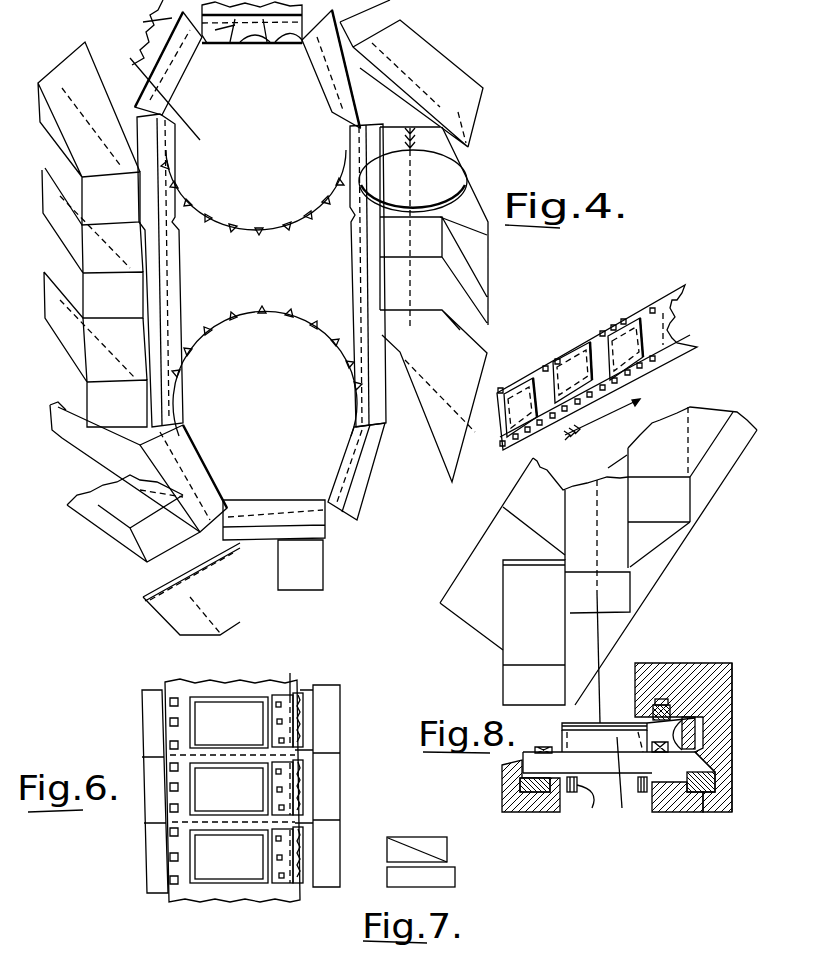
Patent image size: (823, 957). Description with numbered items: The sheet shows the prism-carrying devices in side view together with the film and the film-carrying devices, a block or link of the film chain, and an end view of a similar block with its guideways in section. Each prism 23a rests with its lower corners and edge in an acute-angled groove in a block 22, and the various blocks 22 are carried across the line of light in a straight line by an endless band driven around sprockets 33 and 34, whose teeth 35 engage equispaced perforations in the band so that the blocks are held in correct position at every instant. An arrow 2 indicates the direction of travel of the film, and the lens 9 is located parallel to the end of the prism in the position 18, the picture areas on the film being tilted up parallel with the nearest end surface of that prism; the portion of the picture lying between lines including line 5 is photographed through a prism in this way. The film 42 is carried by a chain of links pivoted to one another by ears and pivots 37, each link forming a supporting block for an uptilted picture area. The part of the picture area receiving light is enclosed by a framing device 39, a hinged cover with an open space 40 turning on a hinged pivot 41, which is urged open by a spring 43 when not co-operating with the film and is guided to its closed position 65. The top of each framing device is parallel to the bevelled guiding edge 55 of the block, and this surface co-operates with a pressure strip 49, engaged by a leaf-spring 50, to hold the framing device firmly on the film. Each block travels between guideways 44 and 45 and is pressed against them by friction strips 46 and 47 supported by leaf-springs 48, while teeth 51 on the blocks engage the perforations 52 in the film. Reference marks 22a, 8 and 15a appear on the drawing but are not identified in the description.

In FIG. 4, the block 22 is at (333, 100).
In FIG. 4, the prism 23a is at (367, 317).
In FIG. 4, the sprocket 33 is at (256, 190).
In FIG. 4, the sprocket 34 is at (521, 392).
In FIG. 4, the teeth 35 is at (264, 52).
In FIG. 4, the cross bar 22a is at (268, 540).
In FIG. 4, the lens 9 is at (453, 178).
In FIG. 4, the optical axis 8 is at (414, 163).
In FIG. 4, the prism position 18 is at (474, 299).
In FIG. 4, the housing wall 15a is at (470, 204).
In FIG. 4, the arrow 2 is at (597, 367).
In FIG. 4, the film 42 is at (557, 363).
In FIG. 8, the film 42 is at (562, 724).
In FIG. 4, the line 5 is at (570, 350).
In FIG. 4, the perforations 52 is at (657, 312).
In FIG. 6, the closed position 65 is at (170, 737).
In FIG. 7, the closed position 65 is at (437, 848).
In FIG. 8, the closed position 65 is at (619, 781).
In FIG. 6, the open space 40 is at (222, 707).
In FIG. 8, the open space 40 is at (607, 723).
In FIG. 6, the framing device 39 is at (268, 700).
In FIG. 8, the framing device 39 is at (574, 724).
In FIG. 6, the hinged pivot 41 is at (296, 694).
In FIG. 8, the hinged pivot 41 is at (703, 718).
In FIG. 7, the bevelled guiding edge 55 is at (407, 833).
In FIG. 8, the pressure strip 49 is at (717, 663).
In FIG. 8, the leaf-spring 50 is at (663, 699).
In FIG. 8, the spring 43 is at (695, 730).
In FIG. 8, the guideway 44 is at (705, 758).
In FIG. 8, the friction strip 46 is at (715, 782).
In FIG. 8, the leaf-spring 48 is at (722, 808).
In FIG. 8, the friction strip 47 is at (535, 790).
In FIG. 8, the guideway 45 is at (523, 760).
In FIG. 8, the teeth 51 is at (535, 750).
In FIG. 8, the ears and pivots 37 is at (582, 805).